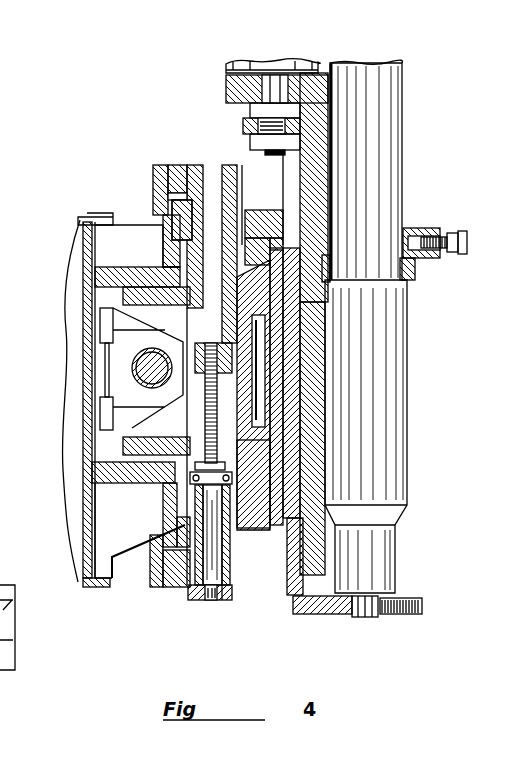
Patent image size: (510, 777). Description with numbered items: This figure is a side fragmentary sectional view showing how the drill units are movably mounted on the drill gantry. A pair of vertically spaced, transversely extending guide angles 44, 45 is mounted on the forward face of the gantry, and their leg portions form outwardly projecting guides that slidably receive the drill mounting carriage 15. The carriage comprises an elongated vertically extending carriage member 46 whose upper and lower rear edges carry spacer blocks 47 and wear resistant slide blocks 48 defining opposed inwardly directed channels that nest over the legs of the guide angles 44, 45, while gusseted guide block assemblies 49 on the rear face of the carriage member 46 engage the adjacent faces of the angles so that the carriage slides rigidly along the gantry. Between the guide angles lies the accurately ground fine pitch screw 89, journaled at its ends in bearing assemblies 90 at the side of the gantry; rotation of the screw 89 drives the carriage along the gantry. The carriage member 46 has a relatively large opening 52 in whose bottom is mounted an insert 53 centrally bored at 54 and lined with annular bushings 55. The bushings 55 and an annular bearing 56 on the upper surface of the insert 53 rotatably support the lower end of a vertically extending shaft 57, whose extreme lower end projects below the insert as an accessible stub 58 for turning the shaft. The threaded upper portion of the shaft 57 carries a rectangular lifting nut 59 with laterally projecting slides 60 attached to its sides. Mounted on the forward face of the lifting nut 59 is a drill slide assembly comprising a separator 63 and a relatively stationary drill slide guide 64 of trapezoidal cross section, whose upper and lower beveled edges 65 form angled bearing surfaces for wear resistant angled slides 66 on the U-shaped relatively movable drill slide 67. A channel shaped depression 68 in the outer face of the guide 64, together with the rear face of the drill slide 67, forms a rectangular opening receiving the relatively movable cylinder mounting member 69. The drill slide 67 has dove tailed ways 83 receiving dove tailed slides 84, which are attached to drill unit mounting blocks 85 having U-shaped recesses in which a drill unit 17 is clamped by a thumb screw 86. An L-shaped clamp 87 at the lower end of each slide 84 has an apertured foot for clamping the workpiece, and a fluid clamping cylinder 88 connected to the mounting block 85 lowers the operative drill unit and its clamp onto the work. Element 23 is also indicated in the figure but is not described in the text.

The drill mounting carriage 15 is at (153, 173).
The drill unit 17 is at (383, 175).
The adjacent member 23 is at (3, 592).
The guide angle 44 is at (88, 270).
The guide angle 45 is at (110, 469).
The carriage member 46 is at (197, 165).
The spacer block 47 is at (176, 165).
The wear resistant slide block 48 is at (172, 215).
The gusseted guide block assembly 49 is at (92, 303).
The opening 52 is at (130, 397).
The insert 53 is at (200, 600).
The bore 54 is at (232, 552).
The annular bushing 55 is at (229, 598).
The annular bearing 56 is at (163, 491).
The shaft 57 is at (165, 518).
The stub 58 is at (216, 600).
The rectangular lifting nut 59 is at (130, 357).
The slide 60 is at (163, 238).
The separator 63 is at (231, 165).
The drill slide guide 64 is at (320, 387).
The beveled edge 65 is at (264, 219).
The angled slide 66 is at (253, 492).
The drill slide 67 is at (283, 322).
The channel shaped depression 68 is at (290, 360).
The cylinder mounting member 69 is at (262, 417).
The dove tailed way 83 is at (300, 232).
The dove tailed slide 84 is at (292, 497).
The drill unit mounting block 85 is at (318, 118).
The thumb screw 86 is at (470, 232).
The L-shaped clamp 87 is at (325, 614).
The fluid clamping cylinder 88 is at (265, 68).
The fine pitch screw 89 is at (138, 370).
The bearing assembly 90 is at (128, 343).